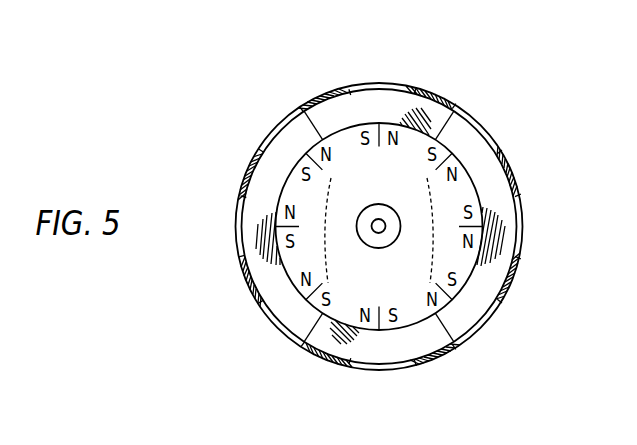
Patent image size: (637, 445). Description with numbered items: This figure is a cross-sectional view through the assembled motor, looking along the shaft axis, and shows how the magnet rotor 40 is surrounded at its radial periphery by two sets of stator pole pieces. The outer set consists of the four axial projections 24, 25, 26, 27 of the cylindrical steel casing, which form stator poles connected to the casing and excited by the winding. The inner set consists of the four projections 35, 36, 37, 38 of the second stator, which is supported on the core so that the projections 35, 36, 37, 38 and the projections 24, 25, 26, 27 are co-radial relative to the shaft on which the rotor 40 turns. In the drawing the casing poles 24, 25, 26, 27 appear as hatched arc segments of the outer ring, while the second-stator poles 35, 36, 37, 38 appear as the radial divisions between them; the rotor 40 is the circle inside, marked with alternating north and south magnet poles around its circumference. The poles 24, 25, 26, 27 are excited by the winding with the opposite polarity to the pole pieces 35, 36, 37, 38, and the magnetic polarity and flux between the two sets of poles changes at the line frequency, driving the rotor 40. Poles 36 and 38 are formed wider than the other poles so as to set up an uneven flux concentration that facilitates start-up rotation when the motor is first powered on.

The axial projection 24 is at (516, 268).
The axial projection 25 is at (511, 170).
The axial projection 26 is at (248, 168).
The axial projection 27 is at (245, 278).
The projection 35 is at (436, 360).
The projection 36 is at (440, 95).
The projection 37 is at (321, 94).
The projection 38 is at (330, 362).
The magnet rotor 40 is at (298, 160).